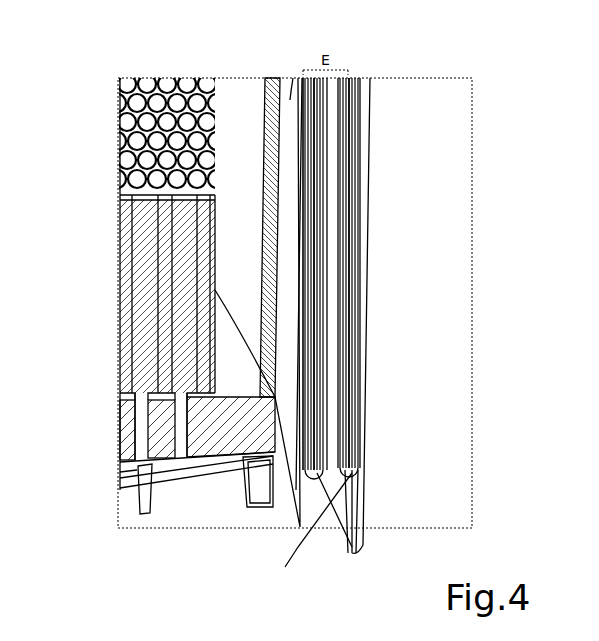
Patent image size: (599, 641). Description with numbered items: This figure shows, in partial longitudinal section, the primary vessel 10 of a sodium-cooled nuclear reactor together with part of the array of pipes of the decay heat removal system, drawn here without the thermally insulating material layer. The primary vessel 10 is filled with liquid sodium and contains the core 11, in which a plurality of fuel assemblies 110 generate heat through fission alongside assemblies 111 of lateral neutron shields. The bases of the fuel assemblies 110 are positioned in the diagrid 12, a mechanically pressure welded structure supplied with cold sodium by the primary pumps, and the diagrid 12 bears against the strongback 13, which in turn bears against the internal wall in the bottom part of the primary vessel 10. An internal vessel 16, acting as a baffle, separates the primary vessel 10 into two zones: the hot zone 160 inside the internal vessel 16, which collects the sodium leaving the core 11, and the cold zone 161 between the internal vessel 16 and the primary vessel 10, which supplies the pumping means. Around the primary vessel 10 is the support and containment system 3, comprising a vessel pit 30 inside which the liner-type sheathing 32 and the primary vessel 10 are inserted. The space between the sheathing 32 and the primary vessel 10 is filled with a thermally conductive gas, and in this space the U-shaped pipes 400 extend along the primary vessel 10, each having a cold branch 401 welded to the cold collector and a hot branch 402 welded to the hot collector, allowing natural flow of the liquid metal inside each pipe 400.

The support and containment system 3 is at (515, 172).
The primary vessel 10 is at (322, 273).
The core 11 is at (55, 142).
The diagrid 12 is at (120, 425).
The strongback 13 is at (120, 478).
The internal vessel 16 is at (267, 97).
The vessel pit 30 is at (430, 252).
The liner-type sheathing 32 is at (355, 153).
The fuel assemblies 110 is at (130, 125).
The battery cells 111 is at (150, 295).
The hot zone 160 is at (227, 93).
The cold zone 161 is at (293, 97).
The U-shaped pipes 400 is at (346, 522).
The cold branch 401 is at (353, 312).
The hot branch 402 is at (320, 355).